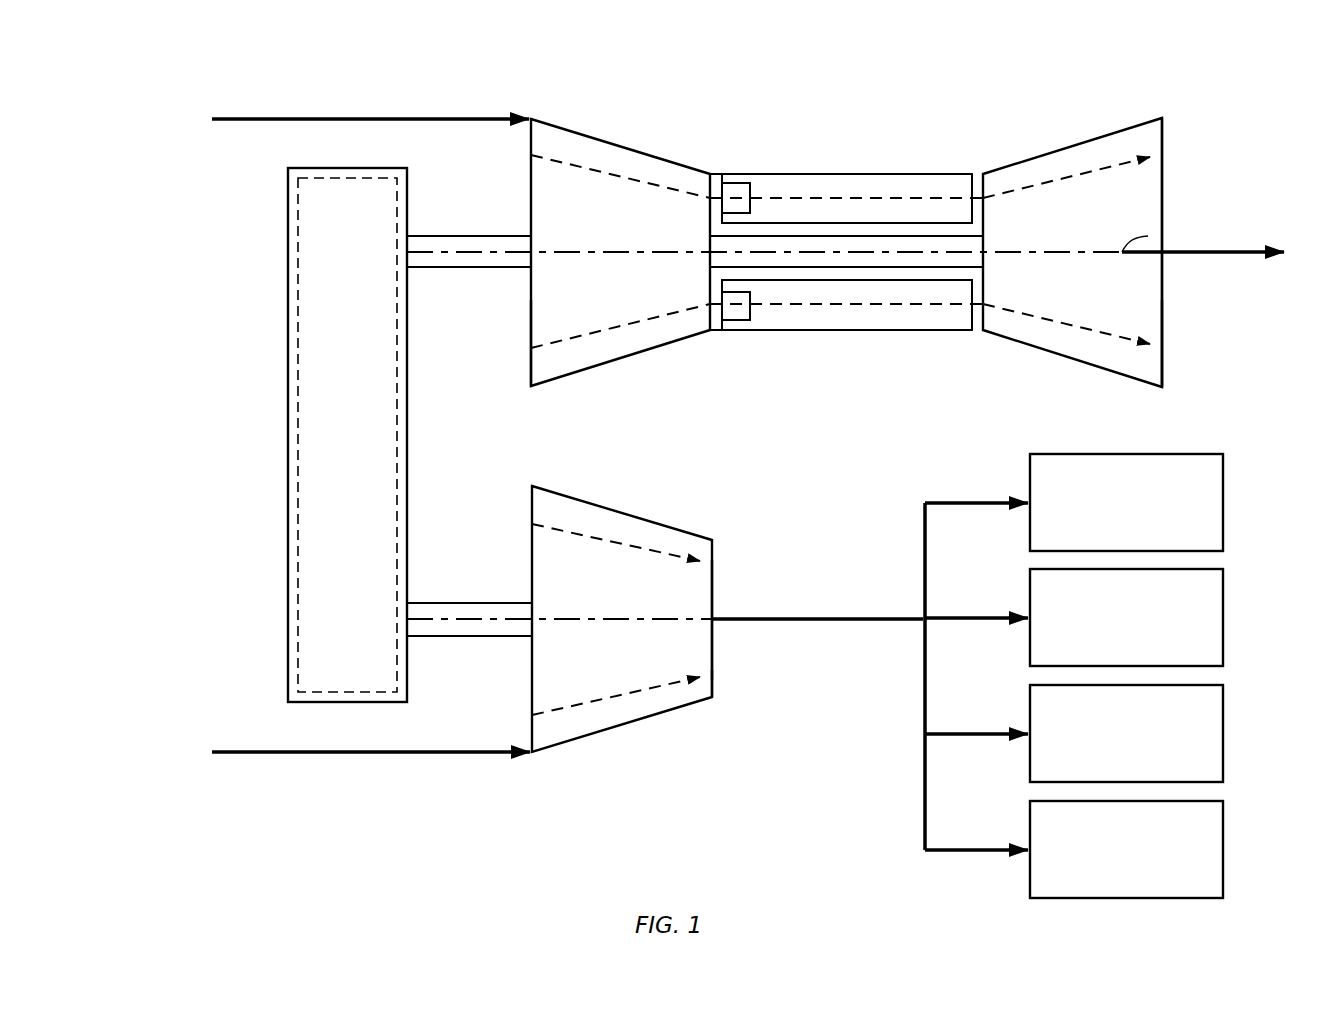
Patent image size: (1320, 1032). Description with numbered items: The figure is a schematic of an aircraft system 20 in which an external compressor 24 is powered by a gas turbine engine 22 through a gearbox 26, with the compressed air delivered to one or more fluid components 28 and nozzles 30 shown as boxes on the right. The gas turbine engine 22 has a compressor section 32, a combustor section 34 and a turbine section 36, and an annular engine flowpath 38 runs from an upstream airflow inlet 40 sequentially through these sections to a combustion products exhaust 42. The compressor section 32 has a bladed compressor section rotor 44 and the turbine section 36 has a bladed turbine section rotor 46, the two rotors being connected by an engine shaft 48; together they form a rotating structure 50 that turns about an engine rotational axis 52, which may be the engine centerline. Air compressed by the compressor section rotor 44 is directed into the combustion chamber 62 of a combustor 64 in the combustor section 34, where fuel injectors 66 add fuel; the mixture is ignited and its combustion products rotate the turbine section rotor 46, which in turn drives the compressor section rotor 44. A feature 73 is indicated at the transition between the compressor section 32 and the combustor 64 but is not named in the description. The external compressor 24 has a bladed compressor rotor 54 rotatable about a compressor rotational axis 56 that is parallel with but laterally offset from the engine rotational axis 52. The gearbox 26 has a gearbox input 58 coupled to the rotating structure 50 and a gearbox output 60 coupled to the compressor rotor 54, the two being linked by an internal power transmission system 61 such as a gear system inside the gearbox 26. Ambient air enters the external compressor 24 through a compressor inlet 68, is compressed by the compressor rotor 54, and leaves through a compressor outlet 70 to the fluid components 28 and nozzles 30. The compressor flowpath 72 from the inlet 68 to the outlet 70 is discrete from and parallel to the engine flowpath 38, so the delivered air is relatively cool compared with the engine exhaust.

The aircraft system 20 is at (146, 112).
The gas turbine engine 22 is at (1190, 76).
The external compressor 24 is at (702, 489).
The gearbox 26 is at (270, 204).
The fluid components 28 is at (1223, 490).
The nozzles 30 is at (1223, 720).
The compressor section 32 is at (621, 126).
The combustor section 34 is at (845, 135).
The turbine section 36 is at (1055, 129).
The engine flowpath 38 is at (572, 163).
The airflow inlet 40 is at (213, 117).
The combustion products exhaust 42 is at (1288, 250).
The compressor section rotor 44 is at (530, 310).
The turbine section rotor 46 is at (1165, 310).
The engine shaft 48 is at (960, 236).
The rotating structure 50 is at (1180, 145).
The engine rotational axis 52 is at (1155, 235).
The compressor rotor 54 is at (712, 683).
The compressor rotational axis 56 is at (684, 618).
The gearbox input 58 is at (478, 235).
The gearbox output 60 is at (478, 602).
The internal power transmission system 61 is at (297, 410).
The combustion chamber 62 is at (922, 187).
The combustor 64 is at (884, 164).
The fuel injectors 66 is at (735, 183).
The compressor inlet 68 is at (532, 760).
The compressor outlet 70 is at (712, 619).
The compressor flowpath 72 is at (572, 530).
The combustor inlet 73 is at (716, 178).